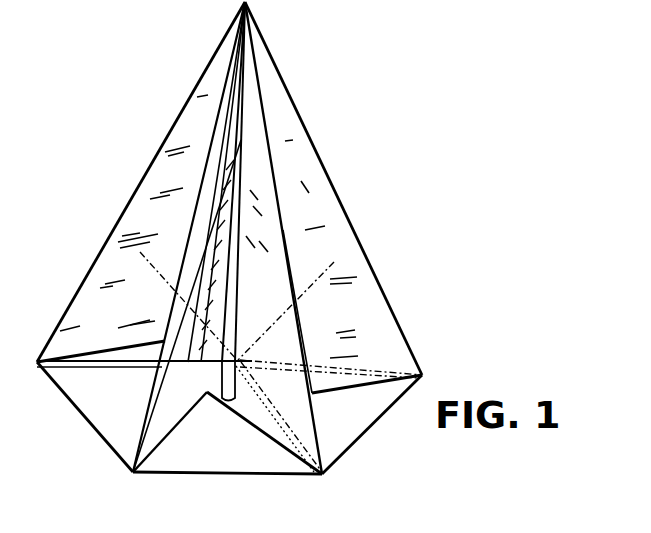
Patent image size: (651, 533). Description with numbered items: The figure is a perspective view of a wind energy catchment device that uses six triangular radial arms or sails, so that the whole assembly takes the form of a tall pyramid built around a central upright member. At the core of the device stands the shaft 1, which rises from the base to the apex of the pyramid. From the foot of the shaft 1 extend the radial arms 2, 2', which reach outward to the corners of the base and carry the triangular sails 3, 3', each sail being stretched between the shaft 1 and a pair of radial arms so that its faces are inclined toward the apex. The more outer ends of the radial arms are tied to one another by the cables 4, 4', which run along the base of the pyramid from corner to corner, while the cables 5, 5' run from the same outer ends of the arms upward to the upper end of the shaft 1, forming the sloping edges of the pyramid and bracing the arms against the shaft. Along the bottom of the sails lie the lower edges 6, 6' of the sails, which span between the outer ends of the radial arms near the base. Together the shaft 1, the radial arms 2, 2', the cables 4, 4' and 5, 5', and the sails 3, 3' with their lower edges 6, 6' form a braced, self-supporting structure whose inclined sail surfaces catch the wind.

The shaft 1 is at (234, 278).
The radial arm 2 is at (170, 432).
The radial arm 2' is at (144, 384).
The sail 3 is at (333, 188).
The sail 3' is at (141, 182).
The cable 4 is at (85, 434).
The cable 4' is at (372, 424).
The cable 5 is at (301, 238).
The cable 5' is at (152, 237).
The lower edge of sail 6 is at (314, 424).
The lower edge of sail 6' is at (101, 338).